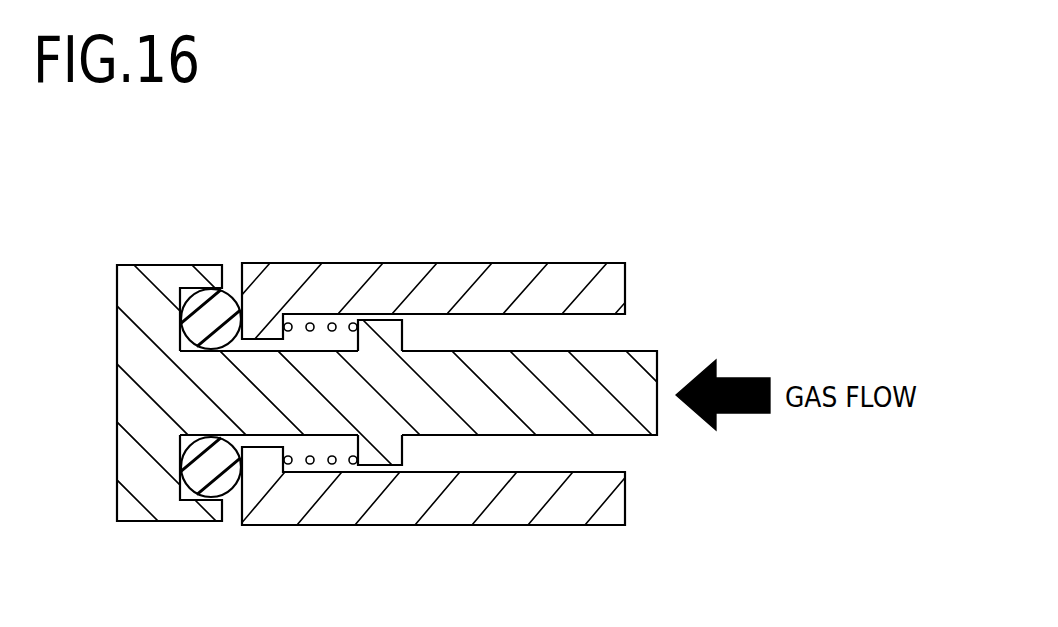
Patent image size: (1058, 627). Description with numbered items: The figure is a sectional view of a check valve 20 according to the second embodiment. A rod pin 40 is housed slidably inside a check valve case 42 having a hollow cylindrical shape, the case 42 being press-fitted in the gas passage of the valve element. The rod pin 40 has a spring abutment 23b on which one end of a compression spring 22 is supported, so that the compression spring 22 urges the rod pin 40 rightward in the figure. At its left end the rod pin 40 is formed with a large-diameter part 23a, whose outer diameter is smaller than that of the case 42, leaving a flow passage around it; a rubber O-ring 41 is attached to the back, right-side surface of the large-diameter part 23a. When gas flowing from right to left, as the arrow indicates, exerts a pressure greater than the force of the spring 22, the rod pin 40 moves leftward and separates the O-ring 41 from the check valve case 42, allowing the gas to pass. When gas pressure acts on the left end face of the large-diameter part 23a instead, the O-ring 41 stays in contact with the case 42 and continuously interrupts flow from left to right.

The check valve 20 is at (610, 230).
The compression spring 22 is at (332, 465).
The large-diameter part 23a is at (159, 277).
The spring abutment 23b is at (383, 328).
The rod pin 40 is at (273, 427).
The rubber O-ring 41 is at (224, 300).
The check valve case 42 is at (423, 498).